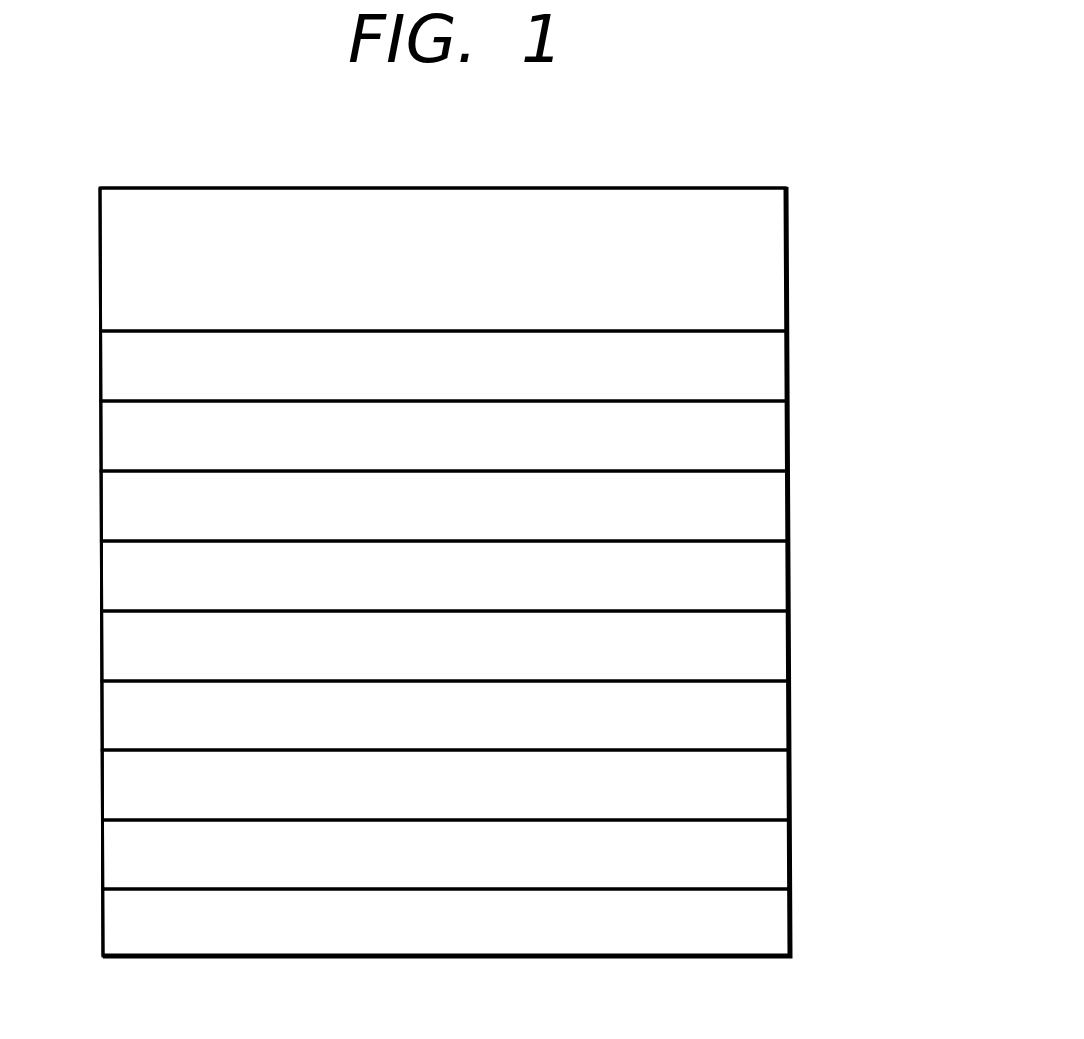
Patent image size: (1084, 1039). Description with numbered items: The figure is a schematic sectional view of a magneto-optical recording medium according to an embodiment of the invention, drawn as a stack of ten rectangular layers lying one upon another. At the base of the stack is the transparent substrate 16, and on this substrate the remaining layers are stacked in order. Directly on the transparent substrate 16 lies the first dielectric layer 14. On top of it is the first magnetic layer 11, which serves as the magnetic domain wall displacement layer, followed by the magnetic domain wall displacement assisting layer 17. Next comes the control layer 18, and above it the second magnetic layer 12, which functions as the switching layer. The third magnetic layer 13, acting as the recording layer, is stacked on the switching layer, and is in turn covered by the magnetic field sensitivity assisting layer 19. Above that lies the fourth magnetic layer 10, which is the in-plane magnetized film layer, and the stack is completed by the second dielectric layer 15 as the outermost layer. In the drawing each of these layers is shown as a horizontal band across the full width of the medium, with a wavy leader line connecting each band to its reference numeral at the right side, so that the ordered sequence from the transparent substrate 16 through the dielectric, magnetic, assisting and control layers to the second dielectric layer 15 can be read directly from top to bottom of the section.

The transparent substrate 16 is at (772, 262).
The first dielectric layer 14 is at (772, 366).
The first magnetic layer 11 is at (772, 433).
The magnetic domain wall displacement assisting layer 17 is at (772, 503).
The control layer 18 is at (772, 576).
The second magnetic layer 12 is at (772, 644).
The third magnetic layer 13 is at (772, 712).
The magnetic field sensitivity assisting layer 19 is at (772, 781).
The fourth magnetic layer 10 is at (772, 857).
The second dielectric layer 15 is at (772, 923).